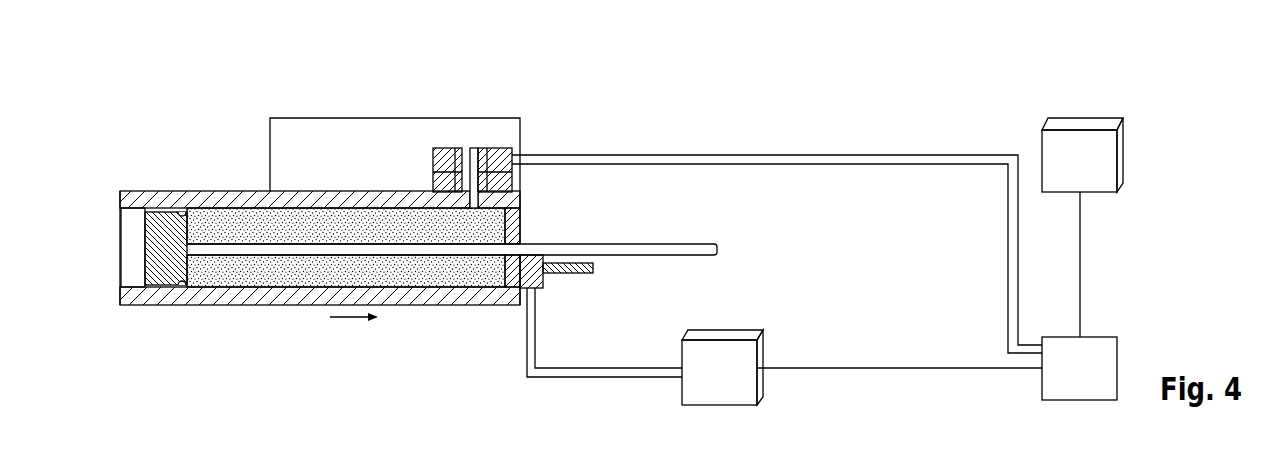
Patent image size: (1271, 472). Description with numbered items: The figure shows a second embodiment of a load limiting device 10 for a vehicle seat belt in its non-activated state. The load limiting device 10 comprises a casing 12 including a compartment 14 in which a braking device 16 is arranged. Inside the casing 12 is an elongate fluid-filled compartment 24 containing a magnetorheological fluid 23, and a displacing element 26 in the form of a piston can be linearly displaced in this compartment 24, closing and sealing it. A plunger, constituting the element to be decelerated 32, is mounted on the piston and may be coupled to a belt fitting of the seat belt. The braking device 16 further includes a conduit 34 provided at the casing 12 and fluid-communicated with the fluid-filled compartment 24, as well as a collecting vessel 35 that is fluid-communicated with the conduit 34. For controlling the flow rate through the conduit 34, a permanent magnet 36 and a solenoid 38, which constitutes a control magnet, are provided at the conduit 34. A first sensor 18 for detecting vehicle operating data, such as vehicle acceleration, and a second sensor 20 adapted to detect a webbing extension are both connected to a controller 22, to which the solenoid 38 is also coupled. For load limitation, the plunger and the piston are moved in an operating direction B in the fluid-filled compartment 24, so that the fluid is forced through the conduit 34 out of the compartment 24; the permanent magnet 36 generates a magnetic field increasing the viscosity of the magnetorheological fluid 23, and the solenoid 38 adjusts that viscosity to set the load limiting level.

The load limiting device 10 is at (748, 113).
The casing 12 is at (214, 296).
The compartment 14 is at (128, 230).
The braking device 16 is at (536, 107).
The first sensor 18 is at (1084, 120).
The second sensor 20 is at (722, 335).
The controller 22 is at (1103, 337).
The magnetorheological fluid 23 is at (275, 270).
The fluid-filled compartment 24 is at (346, 311).
The displacing element 26 is at (155, 245).
The element to be decelerated 32 is at (648, 246).
The conduit 34 is at (472, 148).
The collecting vessel 35 is at (343, 118).
The permanent magnet 36 is at (514, 178).
The solenoid 38 is at (497, 148).
The operating direction B is at (343, 318).